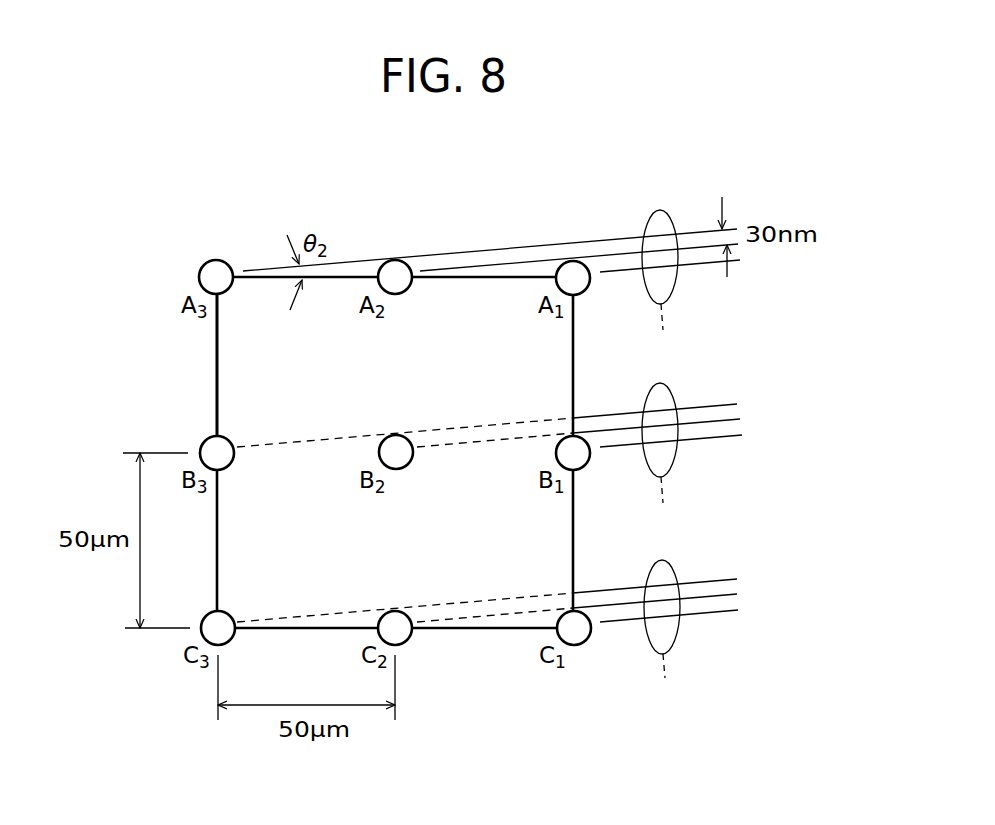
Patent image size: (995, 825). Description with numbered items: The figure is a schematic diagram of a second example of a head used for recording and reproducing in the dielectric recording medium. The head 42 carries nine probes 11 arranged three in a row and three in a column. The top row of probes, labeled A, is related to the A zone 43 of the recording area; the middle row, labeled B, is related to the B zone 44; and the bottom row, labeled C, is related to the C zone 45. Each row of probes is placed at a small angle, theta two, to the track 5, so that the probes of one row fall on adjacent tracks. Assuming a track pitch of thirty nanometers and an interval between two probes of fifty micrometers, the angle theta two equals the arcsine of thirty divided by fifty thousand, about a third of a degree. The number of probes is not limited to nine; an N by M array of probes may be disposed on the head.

The track 5 is at (598, 238).
The probe 11 is at (217, 268).
The head 42 is at (237, 385).
The A zone 43 is at (670, 215).
The B zone 44 is at (670, 392).
The C zone 45 is at (667, 563).